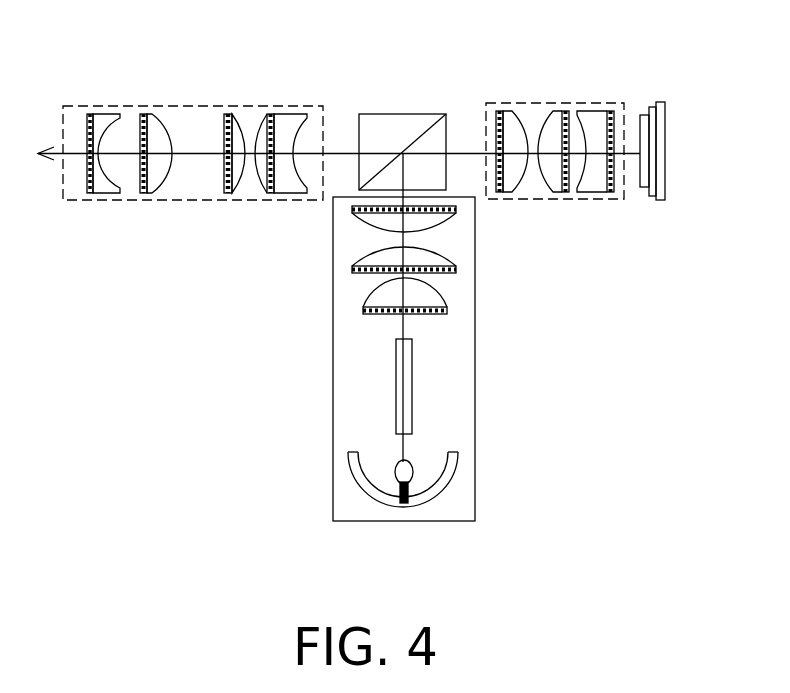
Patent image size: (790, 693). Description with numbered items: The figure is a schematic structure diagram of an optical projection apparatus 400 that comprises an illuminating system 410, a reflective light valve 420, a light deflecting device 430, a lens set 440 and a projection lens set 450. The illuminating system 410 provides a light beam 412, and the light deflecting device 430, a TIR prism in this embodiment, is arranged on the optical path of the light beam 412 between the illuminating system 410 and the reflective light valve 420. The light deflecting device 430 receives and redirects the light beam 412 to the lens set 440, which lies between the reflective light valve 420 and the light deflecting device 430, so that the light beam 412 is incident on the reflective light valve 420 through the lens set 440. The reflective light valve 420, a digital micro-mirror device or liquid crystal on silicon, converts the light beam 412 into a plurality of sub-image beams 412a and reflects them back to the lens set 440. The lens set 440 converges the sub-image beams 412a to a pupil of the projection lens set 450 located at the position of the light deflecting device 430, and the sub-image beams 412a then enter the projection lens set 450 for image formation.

The optical projection apparatus 400 is at (392, 311).
The illuminating system 410 is at (475, 292).
The light beam 412 is at (405, 166).
The sub-image beams 412a is at (463, 150).
The reflective light valve 420 is at (660, 147).
The light deflecting device 430 is at (405, 112).
The lens set 440 is at (557, 102).
The projection lens set 450 is at (204, 104).